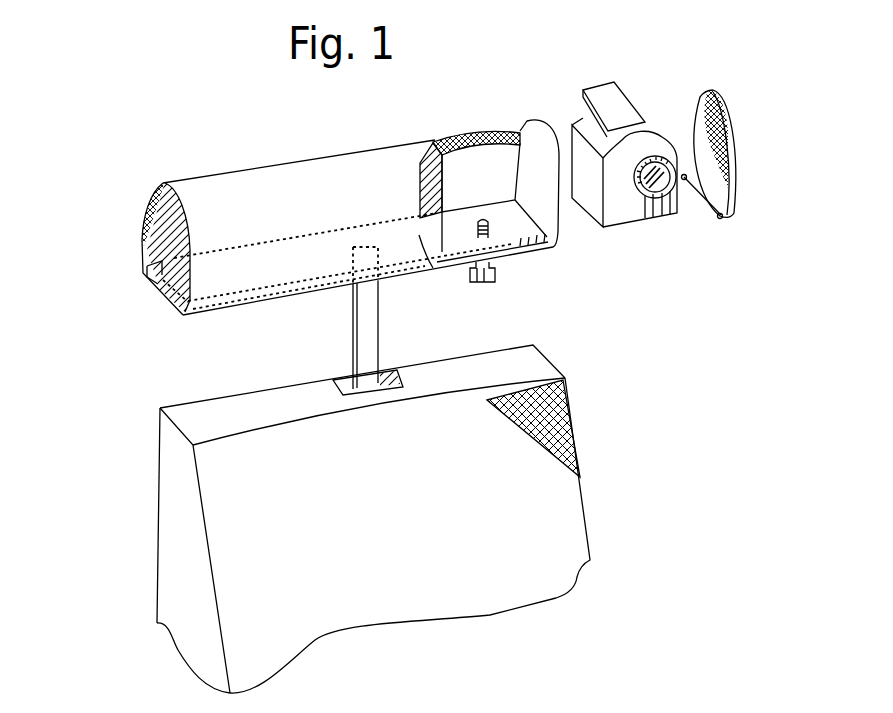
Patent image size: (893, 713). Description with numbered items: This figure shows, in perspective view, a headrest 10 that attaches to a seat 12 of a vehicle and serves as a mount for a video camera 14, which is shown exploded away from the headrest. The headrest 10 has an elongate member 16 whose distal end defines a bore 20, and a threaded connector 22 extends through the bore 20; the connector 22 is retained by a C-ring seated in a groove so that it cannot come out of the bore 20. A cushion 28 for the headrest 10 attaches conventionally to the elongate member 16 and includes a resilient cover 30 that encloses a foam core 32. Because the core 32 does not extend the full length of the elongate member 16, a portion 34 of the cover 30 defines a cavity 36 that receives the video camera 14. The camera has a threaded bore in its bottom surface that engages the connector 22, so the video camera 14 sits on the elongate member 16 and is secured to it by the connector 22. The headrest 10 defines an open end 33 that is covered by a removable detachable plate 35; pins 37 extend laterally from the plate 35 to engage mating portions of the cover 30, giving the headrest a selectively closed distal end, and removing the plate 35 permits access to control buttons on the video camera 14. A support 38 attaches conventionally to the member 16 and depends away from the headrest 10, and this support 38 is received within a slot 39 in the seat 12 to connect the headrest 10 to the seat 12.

The headrest 10 is at (127, 156).
The seat 12 is at (368, 507).
The video camera 14 is at (627, 120).
The elongate member 16 is at (224, 290).
The bore 20 is at (489, 236).
The threaded connector 22 is at (470, 280).
The cushion 28 is at (288, 165).
The resilient cover 30 is at (143, 248).
The foam core 32 is at (163, 183).
The open end 33 is at (548, 121).
The portion of the cover 34 is at (480, 125).
The detachable plate 35 is at (738, 148).
The cavity 36 is at (463, 175).
The pins 37 is at (720, 222).
The support 38 is at (363, 318).
The slot 39 is at (397, 373).